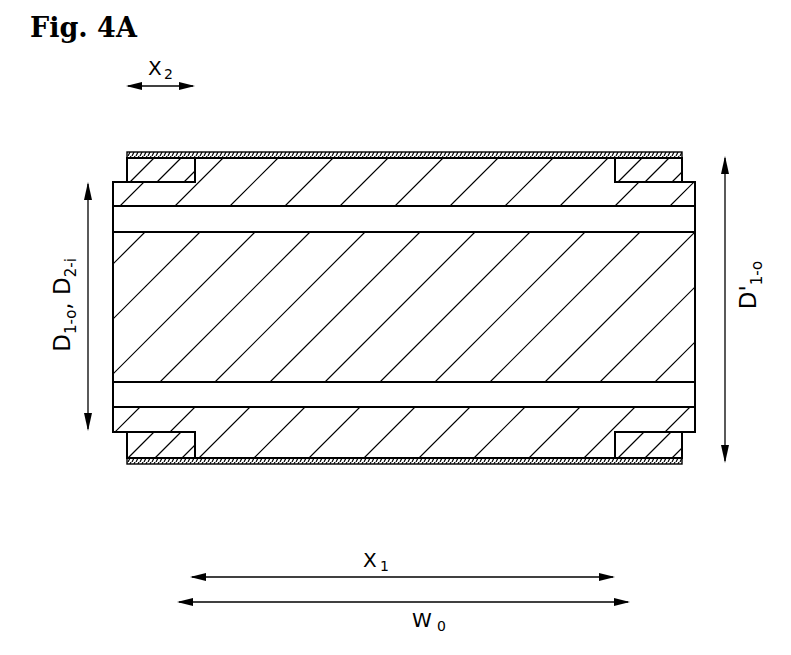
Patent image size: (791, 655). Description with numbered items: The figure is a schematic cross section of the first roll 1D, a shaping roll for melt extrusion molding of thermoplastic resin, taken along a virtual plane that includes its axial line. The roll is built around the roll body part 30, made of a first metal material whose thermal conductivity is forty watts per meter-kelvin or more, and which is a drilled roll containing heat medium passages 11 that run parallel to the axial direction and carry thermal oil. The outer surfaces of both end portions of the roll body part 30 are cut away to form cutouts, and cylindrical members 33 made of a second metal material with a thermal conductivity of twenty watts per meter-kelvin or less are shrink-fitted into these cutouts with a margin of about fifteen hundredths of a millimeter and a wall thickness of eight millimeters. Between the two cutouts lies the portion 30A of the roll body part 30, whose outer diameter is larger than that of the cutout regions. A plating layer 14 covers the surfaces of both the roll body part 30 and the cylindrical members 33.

The first roll 1D is at (395, 284).
The heat medium passage 11 is at (186, 224).
The plating layer 14 is at (245, 151).
The roll body part 30 is at (361, 152).
The portion of the roll body part between the cutouts 30A is at (413, 447).
The cylindrical member 33 is at (656, 452).